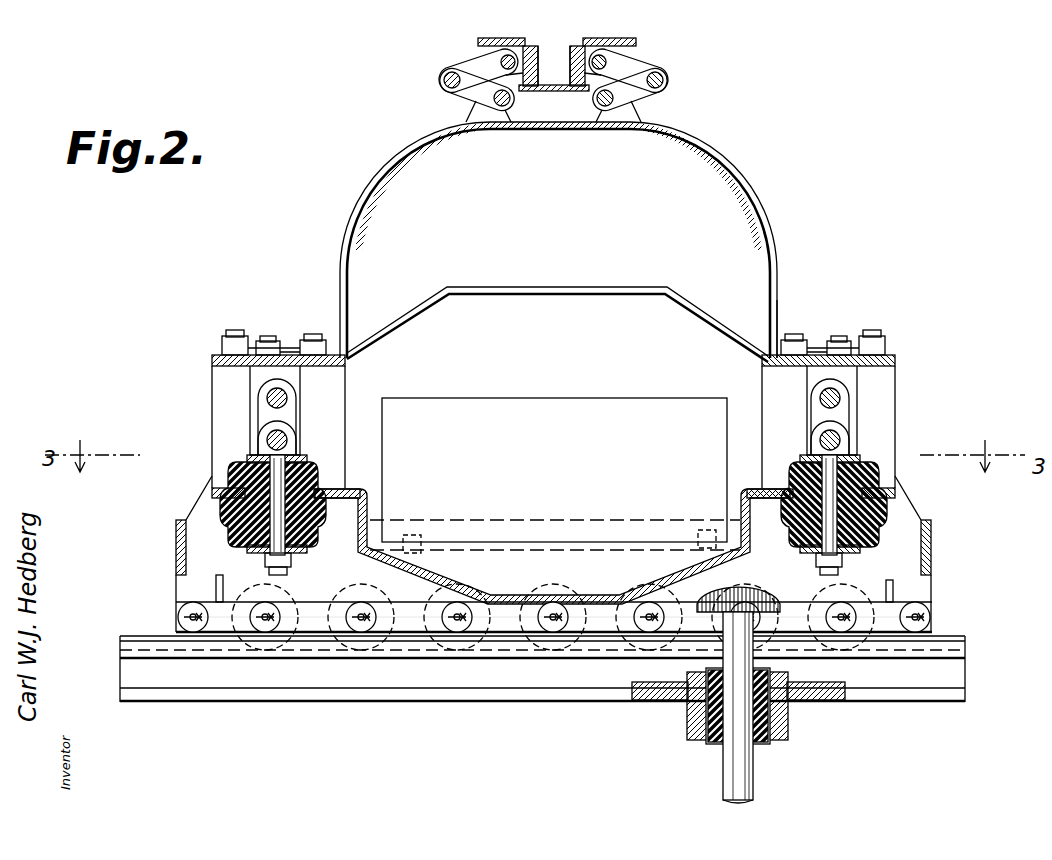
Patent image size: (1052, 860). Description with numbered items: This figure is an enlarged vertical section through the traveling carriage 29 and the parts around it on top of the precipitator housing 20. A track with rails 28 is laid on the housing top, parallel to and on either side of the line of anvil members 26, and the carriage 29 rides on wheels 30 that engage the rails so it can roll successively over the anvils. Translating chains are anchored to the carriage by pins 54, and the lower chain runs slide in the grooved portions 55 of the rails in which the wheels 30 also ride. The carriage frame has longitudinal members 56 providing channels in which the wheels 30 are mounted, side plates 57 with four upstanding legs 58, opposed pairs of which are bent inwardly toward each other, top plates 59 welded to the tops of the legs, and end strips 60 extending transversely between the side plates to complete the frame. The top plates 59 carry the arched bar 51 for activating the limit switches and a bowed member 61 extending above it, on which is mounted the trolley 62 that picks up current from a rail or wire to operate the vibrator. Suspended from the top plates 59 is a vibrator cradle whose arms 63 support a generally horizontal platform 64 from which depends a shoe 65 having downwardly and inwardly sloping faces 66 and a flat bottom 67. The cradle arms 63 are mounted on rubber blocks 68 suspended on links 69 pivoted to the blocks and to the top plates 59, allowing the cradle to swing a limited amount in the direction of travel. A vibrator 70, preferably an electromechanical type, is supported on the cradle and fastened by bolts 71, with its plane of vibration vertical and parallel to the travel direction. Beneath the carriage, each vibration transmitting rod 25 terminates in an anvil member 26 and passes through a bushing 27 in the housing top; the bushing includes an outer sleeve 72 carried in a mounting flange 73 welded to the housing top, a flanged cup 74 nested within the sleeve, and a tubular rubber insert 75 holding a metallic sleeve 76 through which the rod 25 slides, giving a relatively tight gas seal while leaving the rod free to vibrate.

The trolley 62 is at (470, 62).
The bowed member 61 is at (748, 172).
The carriage 29 is at (780, 296).
The arched bar 51 is at (565, 292).
The top plates 59 is at (215, 362).
The upstanding legs 58 is at (213, 408).
The links 69 is at (262, 420).
The vibrator 70 is at (560, 412).
The rubber blocks 68 is at (300, 485).
The cradle arms 63 is at (215, 492).
The side plates 57 is at (910, 517).
The end strips 60 is at (180, 552).
The platform 64 is at (582, 540).
The bolts 71 is at (442, 532).
The shoe 65 is at (752, 538).
The sloping faces 66 is at (469, 572).
The flat bottom 67 is at (606, 600).
The wheels 30 is at (395, 594).
The anvil members 26 is at (776, 600).
The pins 54 is at (190, 612).
The grooved portions 55 is at (136, 640).
The longitudinal members 56 is at (507, 624).
The mounting flange 73 is at (812, 692).
The outer sleeve 72 is at (690, 712).
The bushings 27 is at (792, 712).
The flanged cup 74 is at (705, 737).
The metallic sleeve 76 is at (718, 745).
The tubular rubber insert 75 is at (770, 737).
The vibration transmitting rods 25 is at (752, 787).
The rails 28 is at (200, 682).
The housing 20 is at (300, 703).